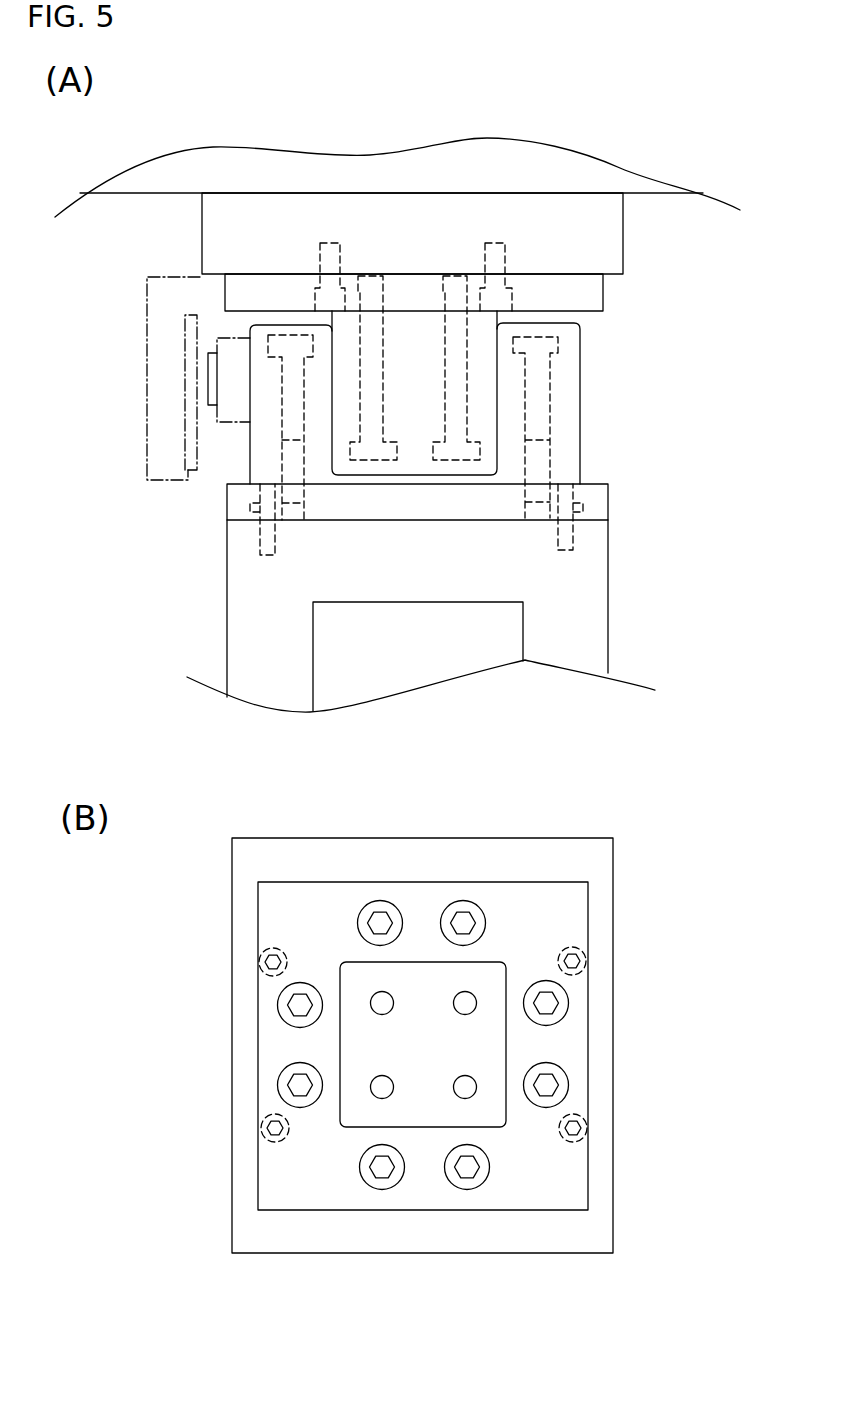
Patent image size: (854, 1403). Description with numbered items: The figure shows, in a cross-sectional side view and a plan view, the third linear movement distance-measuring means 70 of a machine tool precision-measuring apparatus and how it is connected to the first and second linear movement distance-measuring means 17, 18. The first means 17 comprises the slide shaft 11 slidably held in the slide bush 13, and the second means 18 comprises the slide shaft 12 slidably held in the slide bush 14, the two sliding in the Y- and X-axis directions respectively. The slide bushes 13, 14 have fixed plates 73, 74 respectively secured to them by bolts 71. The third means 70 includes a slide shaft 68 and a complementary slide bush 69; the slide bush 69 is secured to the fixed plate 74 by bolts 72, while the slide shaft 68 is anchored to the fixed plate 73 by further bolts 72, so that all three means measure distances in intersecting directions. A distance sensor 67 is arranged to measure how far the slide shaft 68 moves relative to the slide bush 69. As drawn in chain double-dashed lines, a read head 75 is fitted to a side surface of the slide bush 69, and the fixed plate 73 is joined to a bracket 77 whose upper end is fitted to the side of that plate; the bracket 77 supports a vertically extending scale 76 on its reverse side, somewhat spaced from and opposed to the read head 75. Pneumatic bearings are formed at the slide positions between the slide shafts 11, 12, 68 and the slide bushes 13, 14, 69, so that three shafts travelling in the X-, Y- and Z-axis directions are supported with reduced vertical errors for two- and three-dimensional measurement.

The slide shaft 11 is at (521, 167).
The slide shaft 12 is at (467, 652).
The slide bush 13 is at (572, 233).
The slide bush 14 is at (592, 633).
The linear movement distance-measuring means 17 is at (420, 172).
The linear movement distance-measuring means 18 is at (485, 636).
The distance sensor 67 is at (221, 457).
The slide shaft 68 is at (482, 375).
The slide bush 69 is at (568, 448).
The linear movement distance-measuring means 70 is at (131, 341).
The bolts 71 is at (330, 243).
The bolts 72 is at (442, 311).
The fixed plate 73 is at (588, 293).
The fixed plate 74 is at (595, 502).
The read head 75 is at (220, 338).
The scale 76 is at (187, 415).
The bracket 77 is at (147, 363).